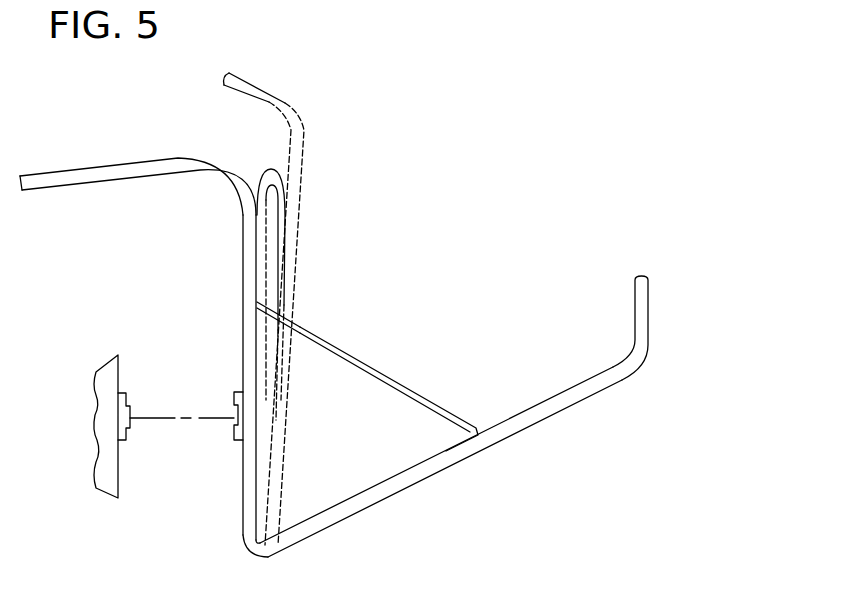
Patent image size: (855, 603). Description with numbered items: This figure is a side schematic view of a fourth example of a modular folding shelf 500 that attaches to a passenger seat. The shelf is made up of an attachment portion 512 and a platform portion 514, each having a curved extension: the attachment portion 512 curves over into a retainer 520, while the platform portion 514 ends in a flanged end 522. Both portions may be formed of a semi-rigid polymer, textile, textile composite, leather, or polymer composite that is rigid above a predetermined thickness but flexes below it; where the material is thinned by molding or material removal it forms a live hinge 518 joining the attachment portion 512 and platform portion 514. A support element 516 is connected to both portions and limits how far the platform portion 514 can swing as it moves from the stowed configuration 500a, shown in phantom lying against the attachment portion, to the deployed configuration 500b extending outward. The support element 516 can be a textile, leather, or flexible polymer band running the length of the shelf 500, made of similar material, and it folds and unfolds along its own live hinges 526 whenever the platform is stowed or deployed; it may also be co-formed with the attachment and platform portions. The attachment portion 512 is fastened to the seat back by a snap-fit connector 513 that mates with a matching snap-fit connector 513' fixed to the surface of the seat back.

The modular folding shelf 500 is at (560, 145).
The stowed configuration 500a is at (300, 92).
The deployed configuration 500b is at (640, 404).
The attachment portion 512 is at (243, 330).
The snap-fit connector 513 is at (186, 440).
The matching snap-fit connector 513' is at (154, 423).
The platform portion 514 is at (517, 432).
The support element 516 is at (403, 385).
The live hinge 518 is at (258, 551).
The retainer 520 is at (98, 165).
The flanged end 522 is at (650, 280).
The live hinges 526 is at (372, 366).